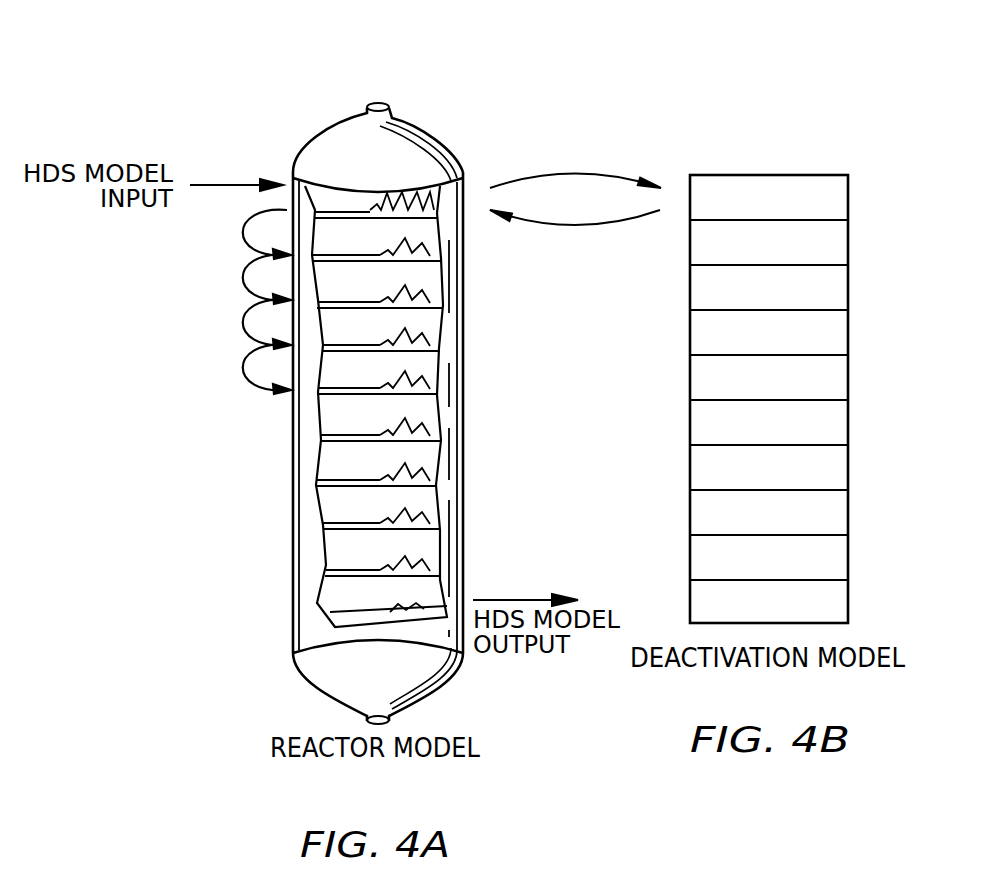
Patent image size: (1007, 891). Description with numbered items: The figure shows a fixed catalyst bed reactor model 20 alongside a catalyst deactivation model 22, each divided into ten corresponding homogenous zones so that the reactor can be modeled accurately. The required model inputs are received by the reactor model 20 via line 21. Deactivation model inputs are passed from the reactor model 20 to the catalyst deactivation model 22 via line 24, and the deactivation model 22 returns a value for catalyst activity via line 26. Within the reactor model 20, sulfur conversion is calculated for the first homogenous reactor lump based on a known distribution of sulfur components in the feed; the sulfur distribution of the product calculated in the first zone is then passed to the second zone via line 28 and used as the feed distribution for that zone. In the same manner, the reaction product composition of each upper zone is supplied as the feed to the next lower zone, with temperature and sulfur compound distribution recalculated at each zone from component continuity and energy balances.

In FIG. 4A, the reactor model 20 is at (463, 413).
In FIG. 4A, the line 21 is at (213, 185).
In FIG. 4B, the catalyst deactivation model 22 is at (850, 515).
In FIG. 4A, the line 24 is at (573, 174).
In FIG. 4A, the line 26 is at (593, 225).
In FIG. 4A, the line 28 is at (251, 238).